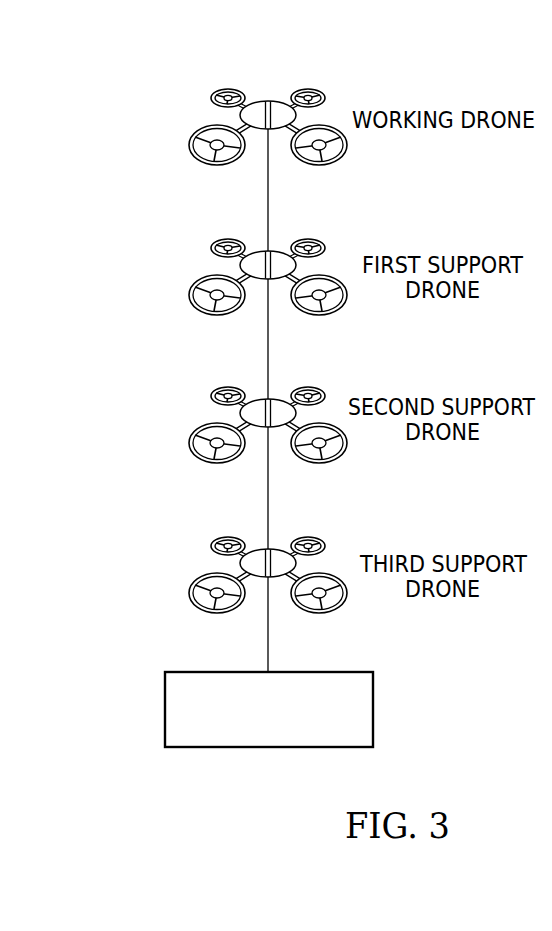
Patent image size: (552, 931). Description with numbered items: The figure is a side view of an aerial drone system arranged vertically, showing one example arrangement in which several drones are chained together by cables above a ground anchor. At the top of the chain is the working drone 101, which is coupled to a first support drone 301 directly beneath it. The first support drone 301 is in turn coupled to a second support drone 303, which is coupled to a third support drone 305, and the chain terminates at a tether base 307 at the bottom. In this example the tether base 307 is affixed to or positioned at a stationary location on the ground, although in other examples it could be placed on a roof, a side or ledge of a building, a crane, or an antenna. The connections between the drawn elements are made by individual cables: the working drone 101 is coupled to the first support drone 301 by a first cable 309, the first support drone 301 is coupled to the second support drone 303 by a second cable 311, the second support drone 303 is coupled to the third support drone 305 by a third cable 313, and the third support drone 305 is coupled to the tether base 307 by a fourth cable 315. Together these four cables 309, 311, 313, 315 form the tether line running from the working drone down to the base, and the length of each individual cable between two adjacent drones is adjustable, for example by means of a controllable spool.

The working drone 101 is at (196, 112).
The first support drone 301 is at (196, 261).
The second support drone 303 is at (196, 410).
The third support drone 305 is at (196, 560).
The tether base 307 is at (164, 708).
The first cable 309 is at (268, 205).
The second cable 311 is at (268, 355).
The third cable 313 is at (268, 505).
The fourth cable 315 is at (268, 641).